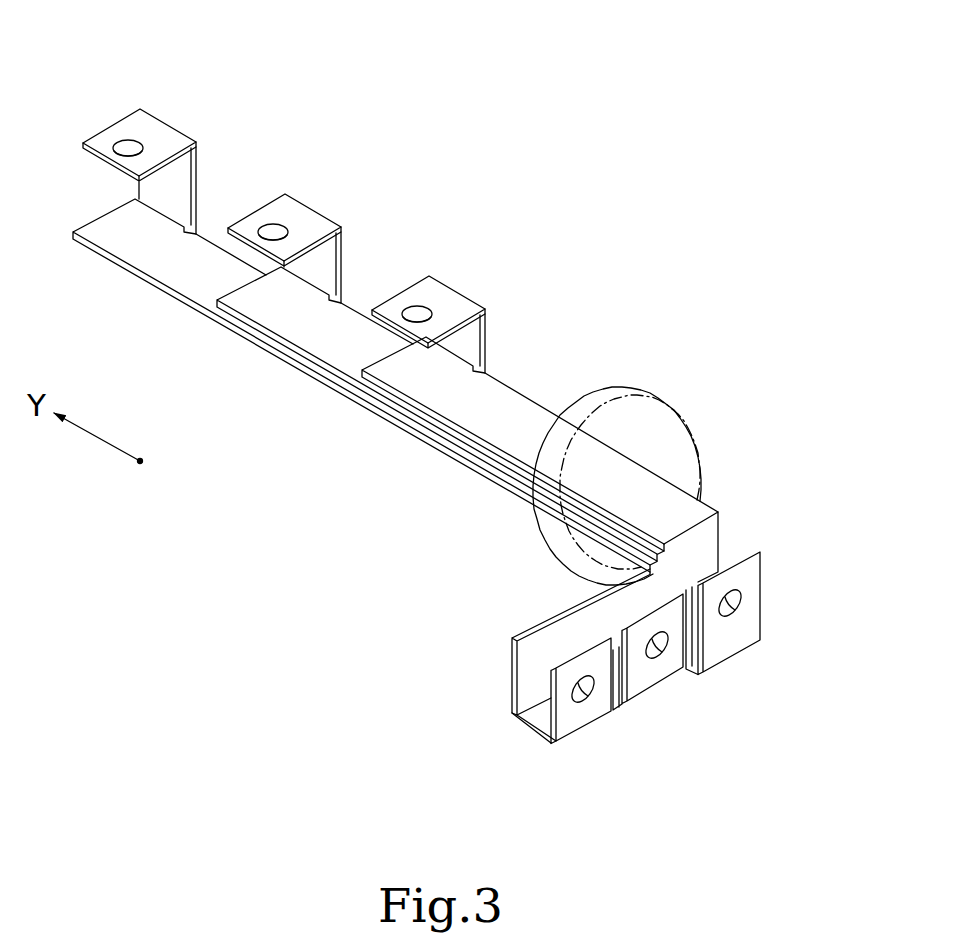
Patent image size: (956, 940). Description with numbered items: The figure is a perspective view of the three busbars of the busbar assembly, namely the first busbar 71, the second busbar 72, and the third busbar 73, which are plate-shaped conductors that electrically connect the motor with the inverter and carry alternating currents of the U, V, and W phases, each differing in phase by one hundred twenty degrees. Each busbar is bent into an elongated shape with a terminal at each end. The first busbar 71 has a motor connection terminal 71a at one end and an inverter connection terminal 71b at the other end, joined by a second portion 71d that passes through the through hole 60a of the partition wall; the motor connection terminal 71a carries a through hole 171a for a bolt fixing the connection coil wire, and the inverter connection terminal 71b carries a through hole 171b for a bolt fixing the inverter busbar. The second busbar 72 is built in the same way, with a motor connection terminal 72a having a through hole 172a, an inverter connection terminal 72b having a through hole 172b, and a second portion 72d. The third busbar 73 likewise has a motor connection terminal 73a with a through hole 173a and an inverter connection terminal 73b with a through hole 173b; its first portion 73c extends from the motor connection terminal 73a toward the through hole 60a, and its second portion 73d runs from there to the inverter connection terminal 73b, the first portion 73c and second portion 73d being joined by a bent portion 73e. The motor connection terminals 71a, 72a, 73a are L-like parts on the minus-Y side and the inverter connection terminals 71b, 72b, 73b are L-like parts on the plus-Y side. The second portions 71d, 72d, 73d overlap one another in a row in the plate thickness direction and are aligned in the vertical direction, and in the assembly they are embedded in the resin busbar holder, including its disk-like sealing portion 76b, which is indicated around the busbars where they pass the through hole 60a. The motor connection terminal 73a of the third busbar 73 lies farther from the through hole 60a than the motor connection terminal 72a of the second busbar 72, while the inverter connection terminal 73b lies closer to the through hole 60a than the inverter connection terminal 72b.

The first busbar 71 is at (128, 112).
The motor connection terminal 71a is at (742, 625).
The inverter connection terminal 71b is at (155, 128).
The second portion 71d is at (162, 267).
The through hole 171a is at (740, 600).
The through hole 171b is at (124, 142).
The second busbar 72 is at (277, 196).
The motor connection terminal 72a is at (664, 678).
The inverter connection terminal 72b is at (292, 208).
The second portion 72d is at (308, 338).
The through hole 172a is at (663, 650).
The through hole 172b is at (270, 226).
The third busbar 73 is at (417, 278).
The motor connection terminal 73a is at (590, 722).
The inverter connection terminal 73b is at (440, 292).
The first portion 73c is at (545, 622).
The second portion 73d is at (512, 400).
The bent portion 73e is at (724, 508).
The through hole 173a is at (584, 688).
The through hole 173b is at (414, 308).
The sealing portion 76b is at (620, 388).
The through hole 60a is at (686, 440).